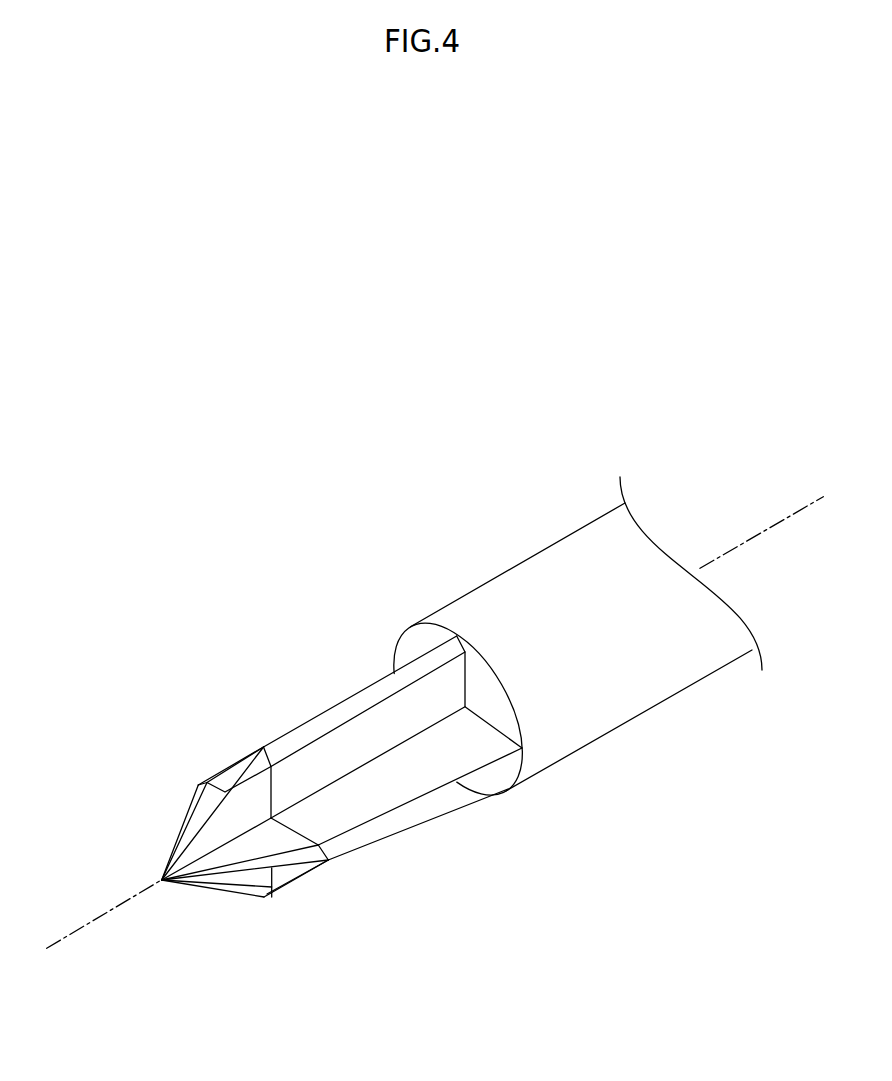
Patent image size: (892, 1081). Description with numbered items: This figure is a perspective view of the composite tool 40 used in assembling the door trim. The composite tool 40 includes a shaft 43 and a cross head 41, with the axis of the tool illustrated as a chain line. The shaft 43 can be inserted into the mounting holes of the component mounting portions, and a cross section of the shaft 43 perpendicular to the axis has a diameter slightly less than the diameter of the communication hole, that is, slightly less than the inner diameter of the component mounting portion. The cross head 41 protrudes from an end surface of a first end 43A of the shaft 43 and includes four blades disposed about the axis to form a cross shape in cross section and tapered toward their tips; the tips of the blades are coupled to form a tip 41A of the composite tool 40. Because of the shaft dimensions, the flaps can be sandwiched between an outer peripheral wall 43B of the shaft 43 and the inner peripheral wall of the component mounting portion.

The composite tool 40 is at (530, 468).
The cross head 41 is at (339, 822).
The tip 41A is at (160, 882).
The shaft 43 is at (578, 661).
The first end 43A is at (492, 698).
The outer peripheral wall 43B is at (638, 722).